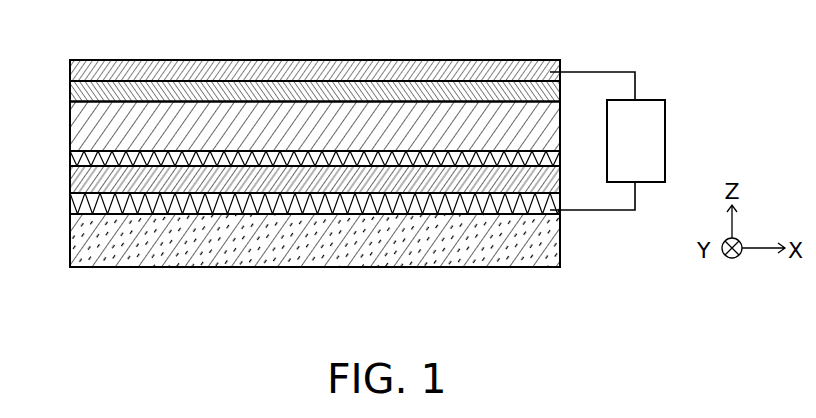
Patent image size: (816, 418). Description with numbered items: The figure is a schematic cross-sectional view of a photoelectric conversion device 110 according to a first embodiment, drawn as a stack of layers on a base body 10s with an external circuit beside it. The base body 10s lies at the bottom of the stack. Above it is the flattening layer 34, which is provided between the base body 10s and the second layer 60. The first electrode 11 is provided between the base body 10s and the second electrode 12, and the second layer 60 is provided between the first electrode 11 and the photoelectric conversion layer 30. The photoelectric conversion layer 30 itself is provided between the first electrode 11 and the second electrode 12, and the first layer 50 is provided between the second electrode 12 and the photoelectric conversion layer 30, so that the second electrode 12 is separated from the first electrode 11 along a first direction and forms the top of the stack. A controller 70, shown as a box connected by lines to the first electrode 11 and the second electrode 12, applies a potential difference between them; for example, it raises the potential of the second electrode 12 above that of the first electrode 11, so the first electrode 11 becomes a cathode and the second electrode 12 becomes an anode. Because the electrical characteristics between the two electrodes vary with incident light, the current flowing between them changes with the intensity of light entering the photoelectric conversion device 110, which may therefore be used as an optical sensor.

The photoelectric conversion device 110 is at (681, 92).
The second electrode 12 is at (85, 71).
The first layer 50 is at (82, 92).
The photoelectric conversion layer 30 is at (86, 127).
The second layer 60 is at (85, 158).
The flattening layer 34 is at (85, 178).
The first electrode 11 is at (82, 202).
The base body 10s is at (84, 242).
The controller 70 is at (666, 126).